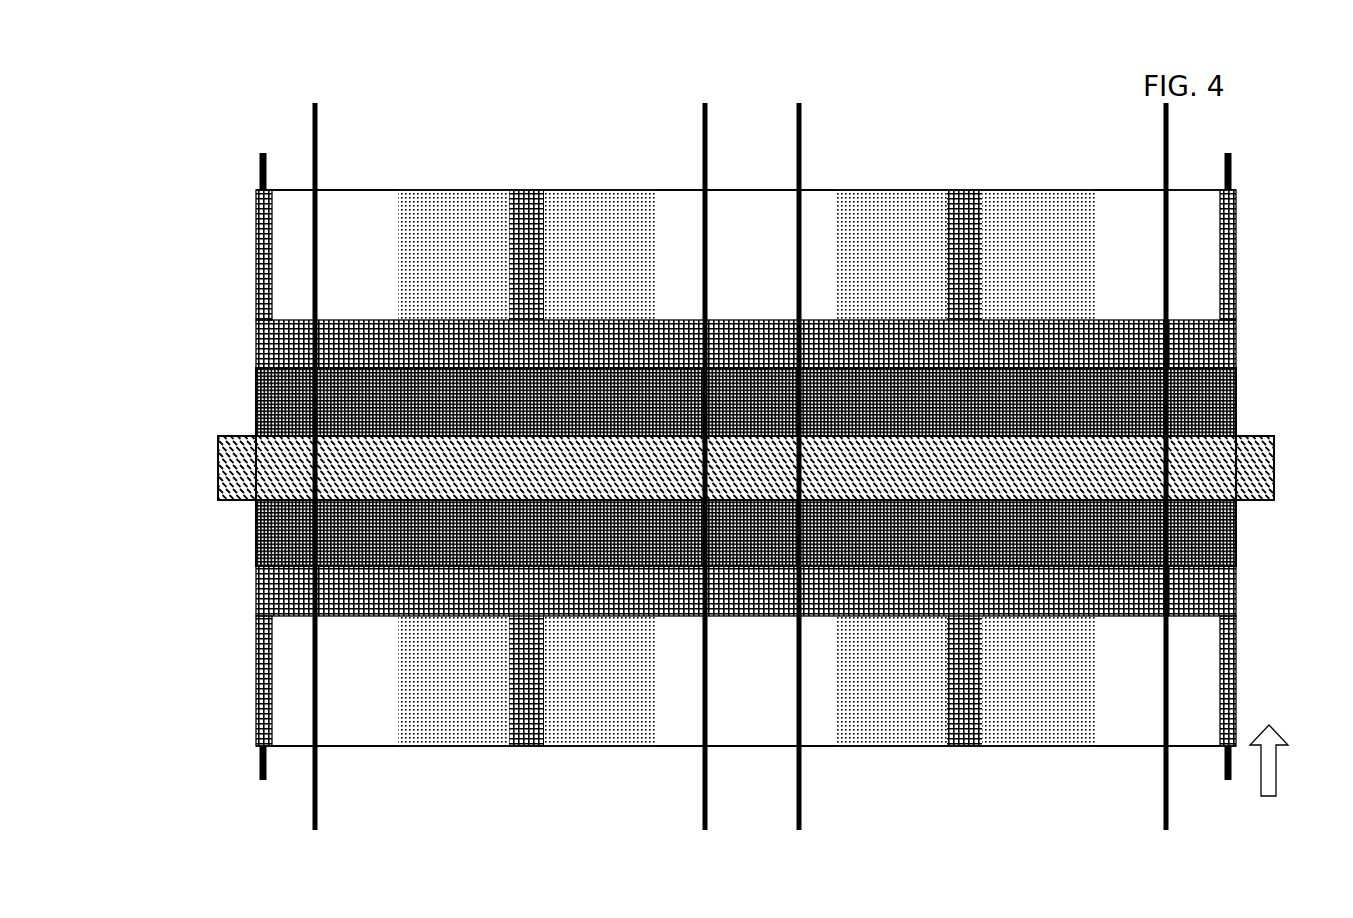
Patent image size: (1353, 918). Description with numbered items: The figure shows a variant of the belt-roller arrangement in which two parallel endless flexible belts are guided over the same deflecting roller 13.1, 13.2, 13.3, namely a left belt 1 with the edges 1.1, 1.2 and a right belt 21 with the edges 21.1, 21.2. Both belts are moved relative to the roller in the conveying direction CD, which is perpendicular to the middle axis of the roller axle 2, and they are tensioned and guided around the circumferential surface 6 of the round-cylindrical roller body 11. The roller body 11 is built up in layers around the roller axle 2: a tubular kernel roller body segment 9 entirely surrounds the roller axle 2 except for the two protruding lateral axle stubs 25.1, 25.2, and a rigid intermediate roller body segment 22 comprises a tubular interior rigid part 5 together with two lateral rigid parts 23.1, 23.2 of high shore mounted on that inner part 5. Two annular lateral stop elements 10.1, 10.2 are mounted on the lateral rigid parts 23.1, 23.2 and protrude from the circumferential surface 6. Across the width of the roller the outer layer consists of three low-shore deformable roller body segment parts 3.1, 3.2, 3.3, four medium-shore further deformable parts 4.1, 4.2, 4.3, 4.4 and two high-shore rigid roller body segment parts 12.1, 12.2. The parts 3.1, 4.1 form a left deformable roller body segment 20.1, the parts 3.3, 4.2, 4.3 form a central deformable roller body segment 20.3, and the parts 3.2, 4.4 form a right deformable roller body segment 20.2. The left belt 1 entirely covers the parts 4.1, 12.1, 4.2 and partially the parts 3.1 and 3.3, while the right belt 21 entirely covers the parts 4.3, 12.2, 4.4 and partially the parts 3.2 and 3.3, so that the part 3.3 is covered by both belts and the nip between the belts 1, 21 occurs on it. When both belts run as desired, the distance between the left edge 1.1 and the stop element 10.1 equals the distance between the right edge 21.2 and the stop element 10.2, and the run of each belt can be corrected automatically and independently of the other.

The pressing belt 1 is at (378, 765).
The left edge 1.1 is at (307, 118).
The right edge 1.2 is at (697, 118).
The roller axle 2 is at (1213, 465).
The deformable roller body segment part 3.1 is at (323, 228).
The deformable roller body segment part 3.2 is at (1107, 228).
The deformable roller body segment part 3.3 is at (655, 228).
The further deformable roller body segment part 4.1 is at (415, 228).
The further deformable roller body segment part 4.2 is at (575, 228).
The further deformable roller body segment part 4.3 is at (867, 228).
The further deformable roller body segment part 4.4 is at (1025, 228).
The tubular interior rigid part 5 is at (270, 585).
The circumferential surface 6 is at (447, 738).
The kernel roller body segment 9 is at (270, 395).
The lateral stop element 10.1 is at (255, 148).
The lateral stop element 10.2 is at (1220, 148).
The roller body 11 is at (895, 748).
The rigid roller body segment part 12.1 is at (512, 228).
The rigid roller body segment part 12.2 is at (955, 228).
The deflecting roller 13.1 is at (693, 864).
The deflecting roller 13.2 is at (662, 810).
The deflecting roller 13.3 is at (750, 790).
The left deformable roller body segment 20.1 is at (405, 135).
The right deformable roller body segment 20.2 is at (1055, 135).
The central deformable roller body segment 20.3 is at (784, 88).
The right belt 21 is at (820, 765).
The edge 21.1 is at (791, 118).
The edge 21.2 is at (1158, 118).
The rigid intermediate roller body segment 22 is at (225, 340).
The lateral rigid part 23.1 is at (258, 250).
The lateral rigid part 23.2 is at (1220, 222).
The lateral axle stub 25.1 is at (235, 478).
The lateral axle stub 25.2 is at (1228, 478).
The conveying direction CD is at (1262, 762).